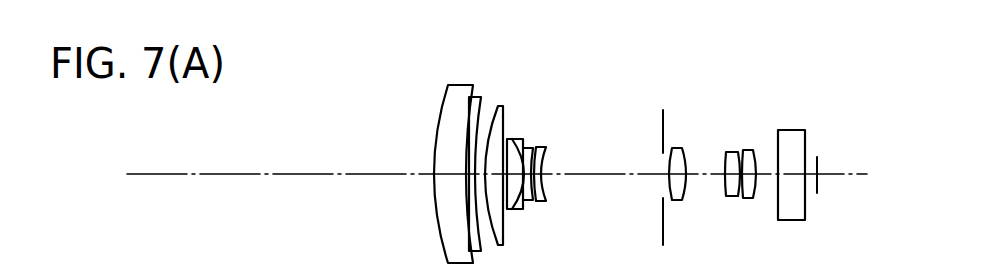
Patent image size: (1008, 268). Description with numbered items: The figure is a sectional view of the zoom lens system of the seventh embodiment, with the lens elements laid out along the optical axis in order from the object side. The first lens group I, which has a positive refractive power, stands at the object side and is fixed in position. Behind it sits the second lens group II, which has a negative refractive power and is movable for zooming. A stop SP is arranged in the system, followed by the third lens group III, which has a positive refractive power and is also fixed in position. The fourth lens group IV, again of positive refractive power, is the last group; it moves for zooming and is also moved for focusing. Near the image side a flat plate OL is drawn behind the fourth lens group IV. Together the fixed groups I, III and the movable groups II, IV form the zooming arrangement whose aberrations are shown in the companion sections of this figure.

The first lens group I is at (439, 39).
The second lens group II is at (510, 39).
The third lens group III is at (658, 39).
The fourth lens group IV is at (722, 39).
The stop SP is at (663, 232).
The optical low-pass filter / glass block OL is at (803, 130).